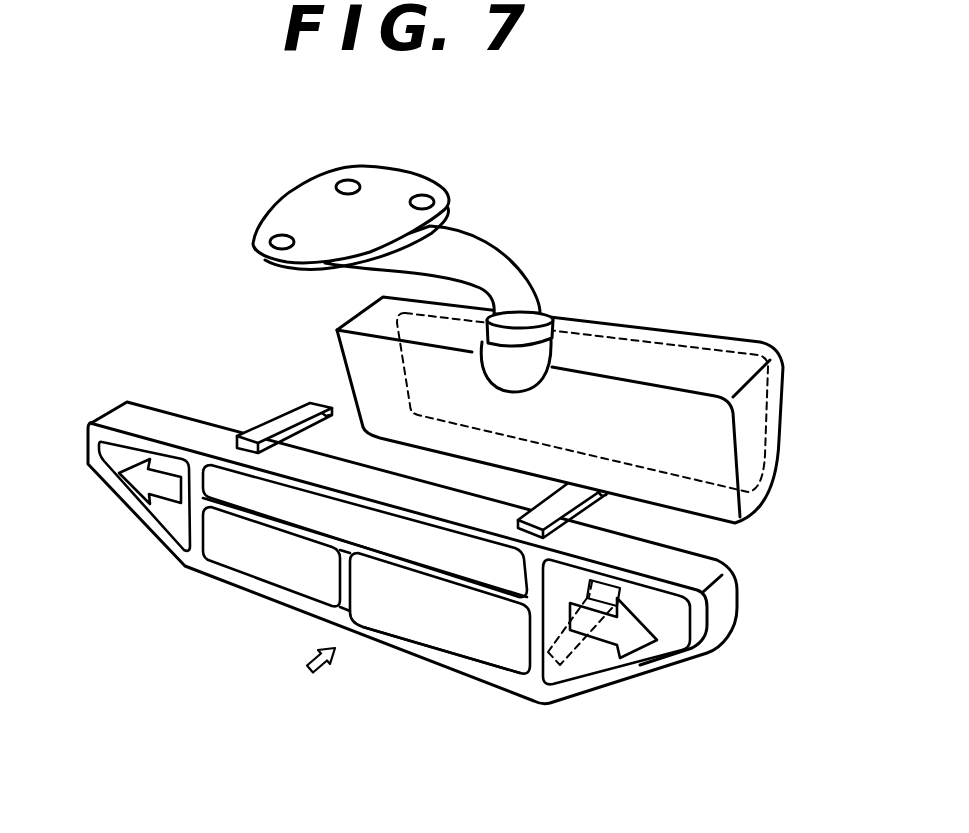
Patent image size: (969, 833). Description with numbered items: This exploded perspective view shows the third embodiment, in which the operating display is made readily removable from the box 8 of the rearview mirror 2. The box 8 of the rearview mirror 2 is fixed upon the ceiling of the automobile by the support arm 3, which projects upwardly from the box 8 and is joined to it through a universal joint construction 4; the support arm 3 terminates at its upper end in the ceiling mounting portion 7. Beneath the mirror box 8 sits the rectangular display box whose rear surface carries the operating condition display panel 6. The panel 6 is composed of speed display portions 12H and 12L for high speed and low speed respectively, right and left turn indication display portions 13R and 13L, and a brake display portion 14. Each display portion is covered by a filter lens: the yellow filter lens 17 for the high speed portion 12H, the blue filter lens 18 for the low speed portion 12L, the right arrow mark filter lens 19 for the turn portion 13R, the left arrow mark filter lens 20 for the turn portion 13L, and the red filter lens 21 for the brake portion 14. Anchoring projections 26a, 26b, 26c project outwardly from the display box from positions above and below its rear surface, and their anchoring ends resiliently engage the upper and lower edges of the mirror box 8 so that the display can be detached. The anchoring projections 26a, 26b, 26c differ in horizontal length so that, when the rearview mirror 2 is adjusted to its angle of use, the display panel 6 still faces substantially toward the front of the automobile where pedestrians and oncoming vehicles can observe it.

The rearview mirror 2 is at (723, 367).
The support arm 3 is at (463, 247).
The universal joint construction 4 is at (517, 357).
The operating condition display panel 6 is at (308, 673).
The mounting plate 7 is at (307, 200).
The box of the rearview mirror 8 is at (667, 360).
The speed display portion (high speed) 12H is at (257, 560).
The speed display portion (low speed) 12L is at (410, 618).
The right turn indication display portion 13R is at (160, 507).
The left turn indication display portion 13L is at (590, 660).
The brake display portion 14 is at (233, 490).
The yellow filter lens 17 is at (287, 580).
The blue filter lens 18 is at (465, 640).
The right arrow mark filter lens 19 is at (110, 460).
The left arrow mark filter lens 20 is at (678, 638).
The red filter lens 21 is at (273, 500).
The anchoring projection 26a is at (303, 407).
The anchoring projection 26b is at (578, 487).
The anchoring projection 26c is at (600, 580).